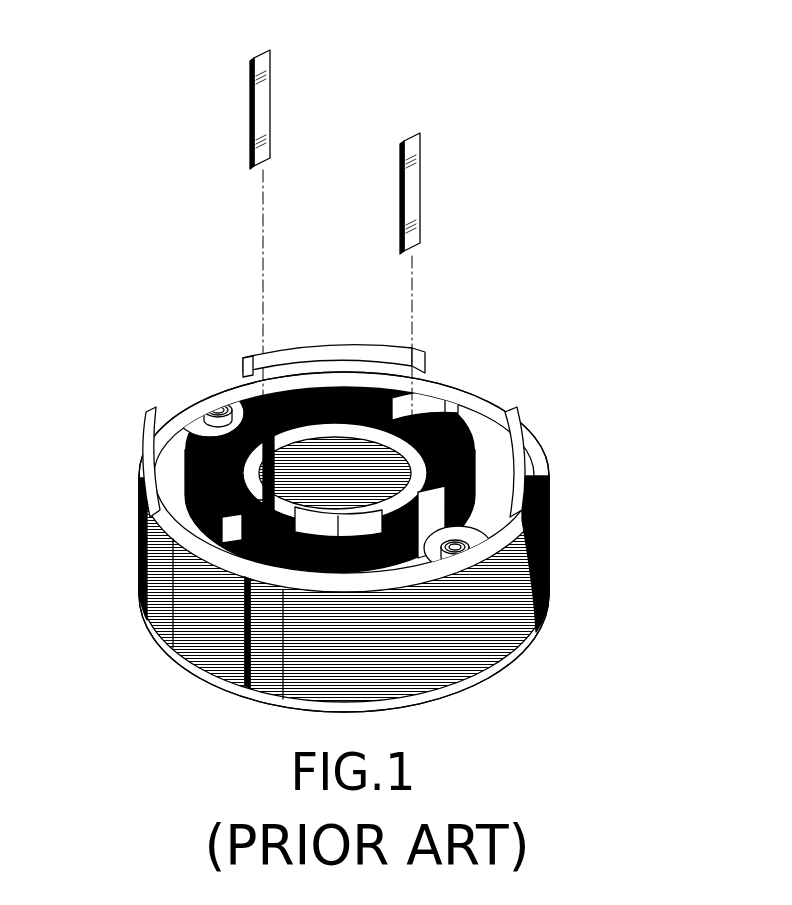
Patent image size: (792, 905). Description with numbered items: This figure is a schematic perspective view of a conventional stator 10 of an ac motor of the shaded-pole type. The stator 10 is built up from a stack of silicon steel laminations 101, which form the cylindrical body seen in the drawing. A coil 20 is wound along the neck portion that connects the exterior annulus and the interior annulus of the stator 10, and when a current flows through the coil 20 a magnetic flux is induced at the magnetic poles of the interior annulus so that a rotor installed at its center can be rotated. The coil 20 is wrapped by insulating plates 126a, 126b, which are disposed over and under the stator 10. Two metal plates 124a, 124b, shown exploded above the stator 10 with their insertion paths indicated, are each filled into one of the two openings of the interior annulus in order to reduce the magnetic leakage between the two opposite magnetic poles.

The stator 10 is at (401, 441).
The silicon steel laminations 101 is at (540, 463).
The coil 20 is at (460, 397).
The metal plate 124a is at (418, 157).
The metal plate 124b is at (268, 73).
The insulating plate 126a is at (256, 363).
The insulating plate 126b is at (194, 662).